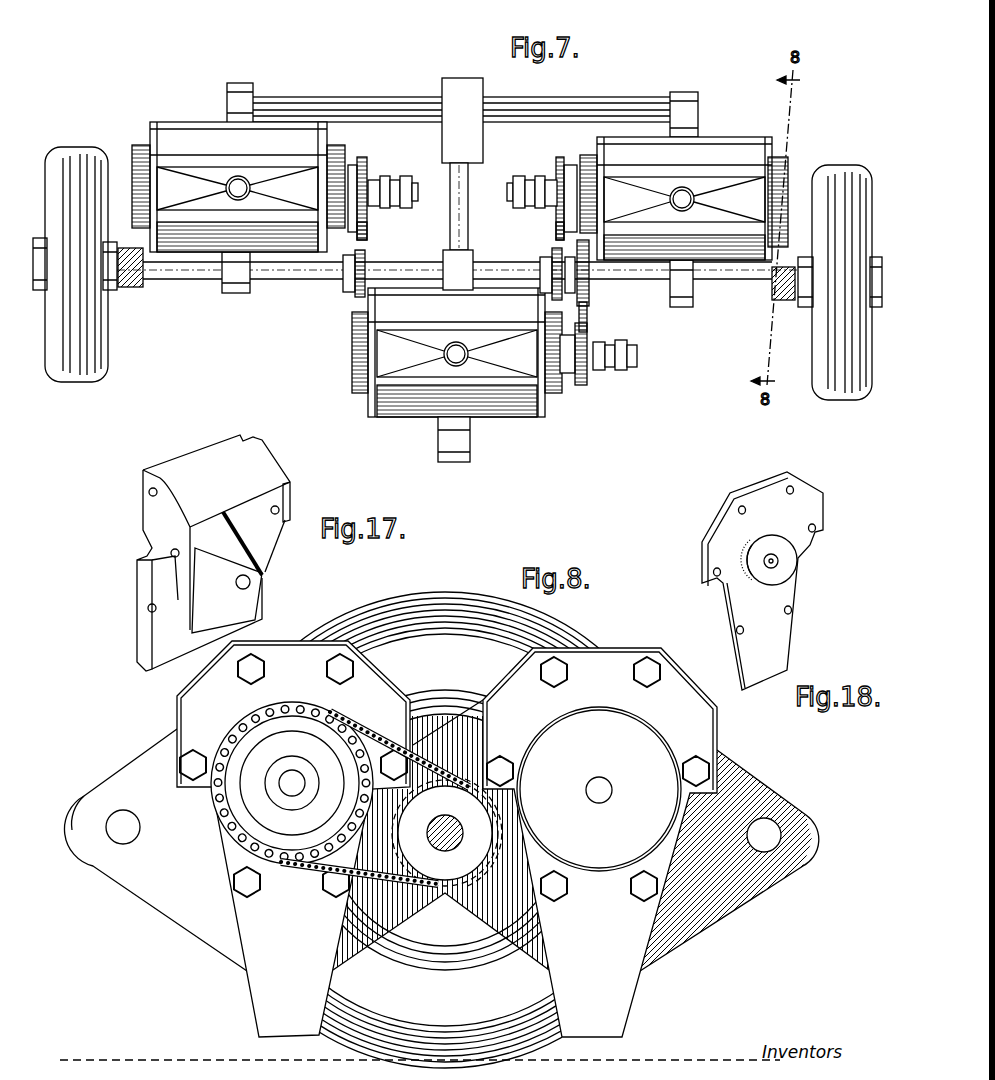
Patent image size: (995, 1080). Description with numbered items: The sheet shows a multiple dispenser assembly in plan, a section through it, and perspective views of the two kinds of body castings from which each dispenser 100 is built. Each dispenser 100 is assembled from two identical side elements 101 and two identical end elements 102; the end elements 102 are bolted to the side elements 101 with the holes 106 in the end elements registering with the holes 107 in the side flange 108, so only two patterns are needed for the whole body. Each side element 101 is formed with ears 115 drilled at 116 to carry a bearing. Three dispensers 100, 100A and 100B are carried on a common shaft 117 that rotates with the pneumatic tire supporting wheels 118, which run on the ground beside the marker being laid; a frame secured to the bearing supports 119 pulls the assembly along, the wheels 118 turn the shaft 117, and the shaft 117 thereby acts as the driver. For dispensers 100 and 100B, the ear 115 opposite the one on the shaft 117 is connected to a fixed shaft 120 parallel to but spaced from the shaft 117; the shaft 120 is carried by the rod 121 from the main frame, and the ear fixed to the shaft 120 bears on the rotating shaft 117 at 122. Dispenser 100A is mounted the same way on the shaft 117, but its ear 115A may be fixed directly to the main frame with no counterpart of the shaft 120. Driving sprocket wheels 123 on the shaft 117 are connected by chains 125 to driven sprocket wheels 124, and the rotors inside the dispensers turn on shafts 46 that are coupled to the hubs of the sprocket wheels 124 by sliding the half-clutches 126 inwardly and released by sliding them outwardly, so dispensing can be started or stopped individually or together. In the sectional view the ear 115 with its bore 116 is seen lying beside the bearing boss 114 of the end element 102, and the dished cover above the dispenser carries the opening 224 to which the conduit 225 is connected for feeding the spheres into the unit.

In FIG. 7, the shaft 46 is at (382, 193).
In FIG. 8, the shaft 46 is at (294, 796).
In FIG. 7, the dispenser 100 is at (192, 138).
In FIG. 8, the dispenser 100 is at (200, 889).
In FIG. 7, the dispenser 100A is at (512, 410).
In FIG. 7, the dispenser 100B is at (723, 150).
In FIG. 17, the side element 101 is at (262, 465).
In FIG. 18, the end element 102 is at (812, 507).
In FIG. 8, the end element 102 is at (259, 934).
In FIG. 18, the hole 106 is at (815, 535).
In FIG. 17, the hole 107 is at (149, 492).
In FIG. 17, the side flange 108 is at (145, 593).
In FIG. 18, the bearing boss 114 is at (783, 570).
In FIG. 8, the bearing boss 114 is at (640, 734).
In FIG. 7, the ear 115 is at (230, 103).
In FIG. 17, the ear 115 is at (240, 562).
In FIG. 8, the ear 115 is at (84, 825).
In FIG. 7, the ear 115A is at (460, 448).
In FIG. 8, the bore 116 is at (115, 808).
In FIG. 7, the shaft 117 is at (193, 262).
In FIG. 8, the shaft 117 is at (450, 833).
In FIG. 7, the supporting wheel 118 is at (95, 347).
In FIG. 8, the supporting wheel 118 is at (448, 610).
In FIG. 7, the bearing support 119 is at (133, 280).
In FIG. 7, the fixed shaft 120 is at (302, 105).
In FIG. 7, the rod 121 is at (463, 193).
In FIG. 7, the bearing relation 122 is at (453, 260).
In FIG. 7, the driving sprocket wheel 123 is at (345, 277).
In FIG. 8, the driving sprocket wheel 123 is at (483, 875).
In FIG. 7, the driven sprocket wheel 124 is at (367, 170).
In FIG. 7, the chain 125 is at (365, 237).
In FIG. 7, the half-clutch 126 is at (390, 190).
In FIG. 8, the opening 224 is at (255, 758).
In FIG. 7, the conduit 225 is at (580, 308).
In FIG. 8, the conduit 225 is at (390, 769).